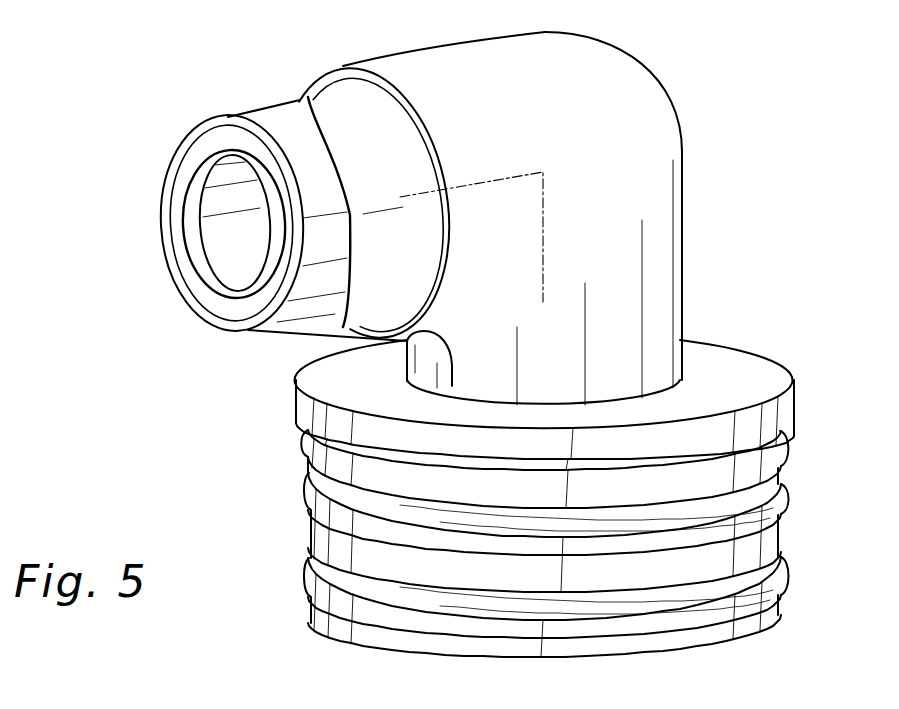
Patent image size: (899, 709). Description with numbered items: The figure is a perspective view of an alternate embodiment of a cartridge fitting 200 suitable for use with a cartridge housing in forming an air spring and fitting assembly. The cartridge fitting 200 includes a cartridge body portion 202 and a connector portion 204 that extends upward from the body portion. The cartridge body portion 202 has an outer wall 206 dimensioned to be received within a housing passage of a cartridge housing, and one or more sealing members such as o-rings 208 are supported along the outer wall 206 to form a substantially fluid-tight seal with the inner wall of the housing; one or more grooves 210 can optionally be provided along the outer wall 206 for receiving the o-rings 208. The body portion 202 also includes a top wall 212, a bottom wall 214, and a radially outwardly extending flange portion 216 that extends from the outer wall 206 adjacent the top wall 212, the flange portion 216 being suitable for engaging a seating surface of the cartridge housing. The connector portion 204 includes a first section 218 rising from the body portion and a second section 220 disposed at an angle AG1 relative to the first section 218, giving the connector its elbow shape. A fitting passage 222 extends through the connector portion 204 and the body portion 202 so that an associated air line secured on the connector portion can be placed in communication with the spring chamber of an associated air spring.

The cartridge fitting 200 is at (140, 108).
The cartridge body portion 202 is at (788, 524).
The connector portion 204 is at (676, 79).
The outer wall 206 is at (305, 535).
The o-rings 208 is at (767, 490).
The grooves 210 is at (745, 576).
The top wall 212 is at (720, 387).
The bottom wall 214 is at (384, 638).
The flange portion 216 is at (770, 417).
The first section 218 is at (683, 225).
The second section 220 is at (397, 53).
The fitting passage 222 is at (245, 240).
The angle AG1 is at (543, 263).